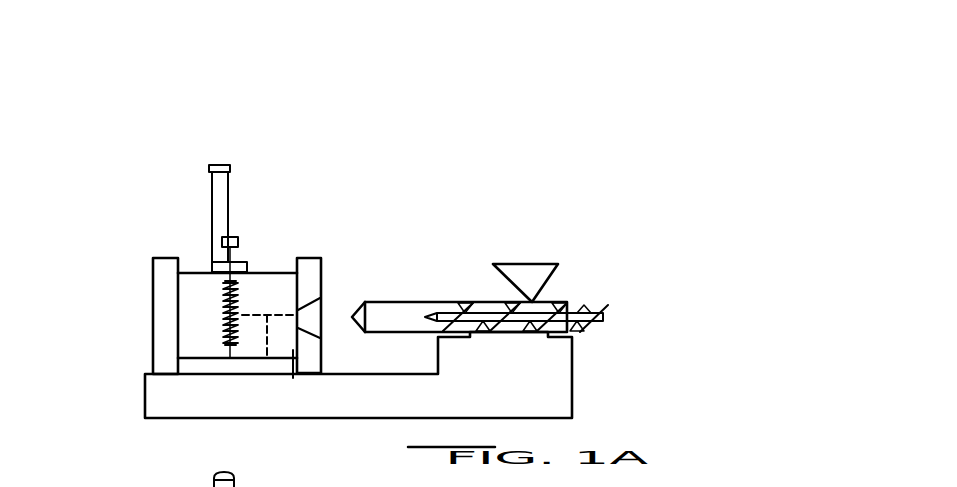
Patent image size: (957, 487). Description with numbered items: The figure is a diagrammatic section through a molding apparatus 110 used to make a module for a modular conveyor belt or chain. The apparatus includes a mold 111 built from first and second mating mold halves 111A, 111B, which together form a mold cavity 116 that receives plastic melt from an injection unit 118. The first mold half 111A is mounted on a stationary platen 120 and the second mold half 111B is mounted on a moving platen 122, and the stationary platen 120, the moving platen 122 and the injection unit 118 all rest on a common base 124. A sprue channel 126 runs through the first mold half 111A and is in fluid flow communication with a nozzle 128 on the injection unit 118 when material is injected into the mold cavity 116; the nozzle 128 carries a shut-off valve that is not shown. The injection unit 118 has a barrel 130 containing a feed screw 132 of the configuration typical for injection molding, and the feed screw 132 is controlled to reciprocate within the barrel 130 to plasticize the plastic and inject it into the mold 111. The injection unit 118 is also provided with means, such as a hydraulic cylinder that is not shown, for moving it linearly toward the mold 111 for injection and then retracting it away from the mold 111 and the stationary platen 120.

The molding apparatus 110 is at (559, 80).
The mold 111 is at (195, 270).
The first mold half 111A is at (288, 343).
The second mold half 111B is at (200, 317).
The mold cavity 116 is at (238, 300).
The injection unit 118 is at (548, 250).
The stationary platen 120 is at (324, 360).
The moving platen 122 is at (151, 360).
The common base 124 is at (568, 393).
The sprue channel 126 is at (267, 358).
The nozzle 128 is at (352, 316).
The barrel 130 is at (398, 310).
The feed screw 132 is at (592, 312).